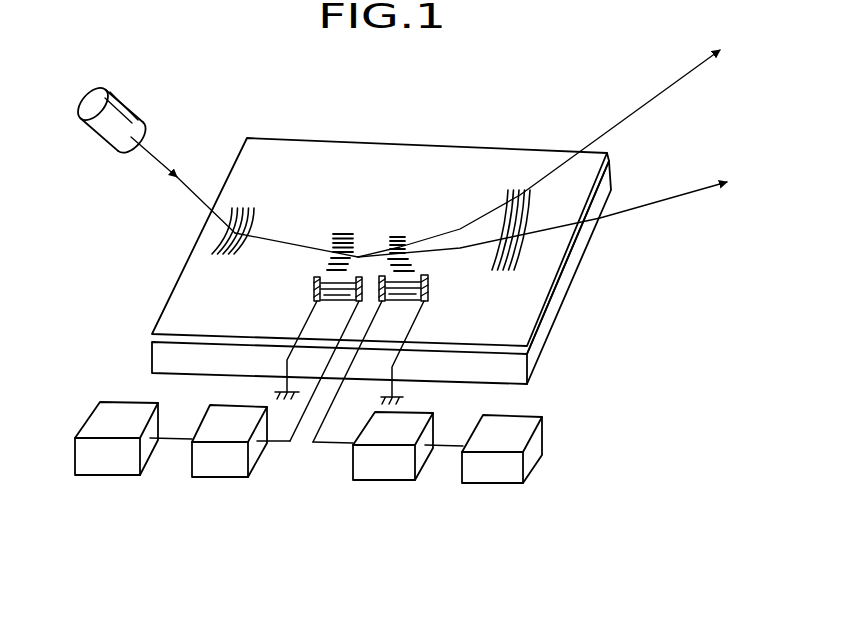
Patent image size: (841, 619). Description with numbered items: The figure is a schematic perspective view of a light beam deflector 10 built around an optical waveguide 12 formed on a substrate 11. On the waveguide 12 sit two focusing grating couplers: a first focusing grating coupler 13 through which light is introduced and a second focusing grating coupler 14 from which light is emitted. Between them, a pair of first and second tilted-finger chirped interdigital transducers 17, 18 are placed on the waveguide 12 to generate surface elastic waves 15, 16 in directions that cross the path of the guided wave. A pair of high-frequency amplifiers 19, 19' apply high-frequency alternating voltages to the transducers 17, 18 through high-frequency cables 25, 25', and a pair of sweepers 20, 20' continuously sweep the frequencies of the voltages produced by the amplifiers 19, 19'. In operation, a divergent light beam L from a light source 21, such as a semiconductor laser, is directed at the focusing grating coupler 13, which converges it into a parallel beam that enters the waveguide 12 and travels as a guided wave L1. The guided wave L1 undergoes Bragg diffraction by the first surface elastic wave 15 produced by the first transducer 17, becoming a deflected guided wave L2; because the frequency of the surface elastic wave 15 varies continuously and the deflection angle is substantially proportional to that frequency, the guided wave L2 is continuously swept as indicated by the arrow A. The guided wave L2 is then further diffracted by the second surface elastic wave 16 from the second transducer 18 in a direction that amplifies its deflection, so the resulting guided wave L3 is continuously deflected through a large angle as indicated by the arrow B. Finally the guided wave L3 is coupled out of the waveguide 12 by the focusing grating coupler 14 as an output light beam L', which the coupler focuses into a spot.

The light beam deflector 10 is at (463, 100).
The substrate 11 is at (167, 355).
The optical waveguide 12 is at (177, 305).
The focusing grating coupler 13 is at (237, 207).
The focusing grating coupler 14 is at (507, 195).
The first surface elastic wave 15 is at (343, 234).
The second surface elastic wave 16 is at (397, 233).
The first tilted-finger chirped interdigital transducer 17 is at (314, 290).
The second tilted-finger chirped interdigital transducer 18 is at (428, 287).
The high-frequency amplifier 19 is at (229, 461).
The high-frequency amplifier 19' is at (408, 468).
The sweeper 20 is at (133, 460).
The sweeper 20' is at (502, 471).
The light source 21 is at (137, 116).
The high-frequency cable 25 is at (277, 463).
The high-frequency cable 25' is at (331, 467).
The light beam L is at (183, 180).
The guided wave L1 is at (297, 242).
The guided wave L2 is at (367, 250).
The guided wave L3 is at (440, 233).
The light beam L' is at (539, 153).
The arrow A is at (380, 263).
The arrow B is at (492, 214).